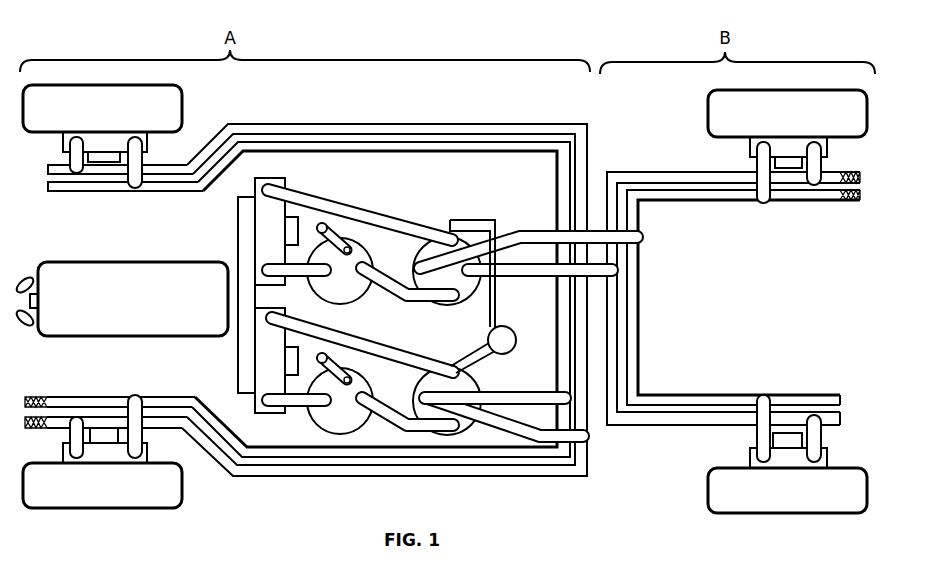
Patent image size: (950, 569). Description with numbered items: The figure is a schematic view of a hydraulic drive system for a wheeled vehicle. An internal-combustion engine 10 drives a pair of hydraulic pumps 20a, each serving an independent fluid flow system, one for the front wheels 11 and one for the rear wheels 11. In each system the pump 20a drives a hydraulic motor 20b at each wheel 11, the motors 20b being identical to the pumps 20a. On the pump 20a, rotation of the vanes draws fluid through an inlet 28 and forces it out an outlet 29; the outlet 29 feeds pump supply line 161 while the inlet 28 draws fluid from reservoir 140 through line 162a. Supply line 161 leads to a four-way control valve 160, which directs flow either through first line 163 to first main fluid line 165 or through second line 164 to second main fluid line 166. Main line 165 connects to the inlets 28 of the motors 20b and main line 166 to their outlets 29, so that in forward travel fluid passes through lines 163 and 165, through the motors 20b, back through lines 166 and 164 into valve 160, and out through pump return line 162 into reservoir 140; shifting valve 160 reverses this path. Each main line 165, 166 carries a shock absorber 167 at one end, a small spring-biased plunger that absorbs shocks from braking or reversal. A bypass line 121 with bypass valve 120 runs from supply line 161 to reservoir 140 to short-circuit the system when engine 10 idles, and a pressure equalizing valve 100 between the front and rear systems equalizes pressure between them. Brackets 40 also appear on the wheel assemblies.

The internal-combustion engine 10 is at (120, 307).
The wheel 11 is at (66, 112).
The hydraulic pump 20a is at (262, 225).
The hydraulic motor 20b is at (113, 130).
The inlet 28 is at (142, 156).
The outlet 29 is at (70, 158).
The bracket 40 is at (110, 162).
The pressure equalizing valve 100 is at (508, 348).
The bypass valve 120 is at (323, 228).
The bypass line 121 is at (348, 249).
The fluid flow reservoir 140 is at (329, 294).
The four-way control valve 160 is at (439, 287).
The pump supply line 161 is at (292, 193).
The pump return line 162 is at (410, 297).
The line 162a is at (305, 407).
The first line 163 is at (533, 272).
The second line 164 is at (531, 236).
The first main fluid line 165 is at (560, 318).
The second main fluid line 166 is at (580, 418).
The shock absorber 167 is at (25, 418).